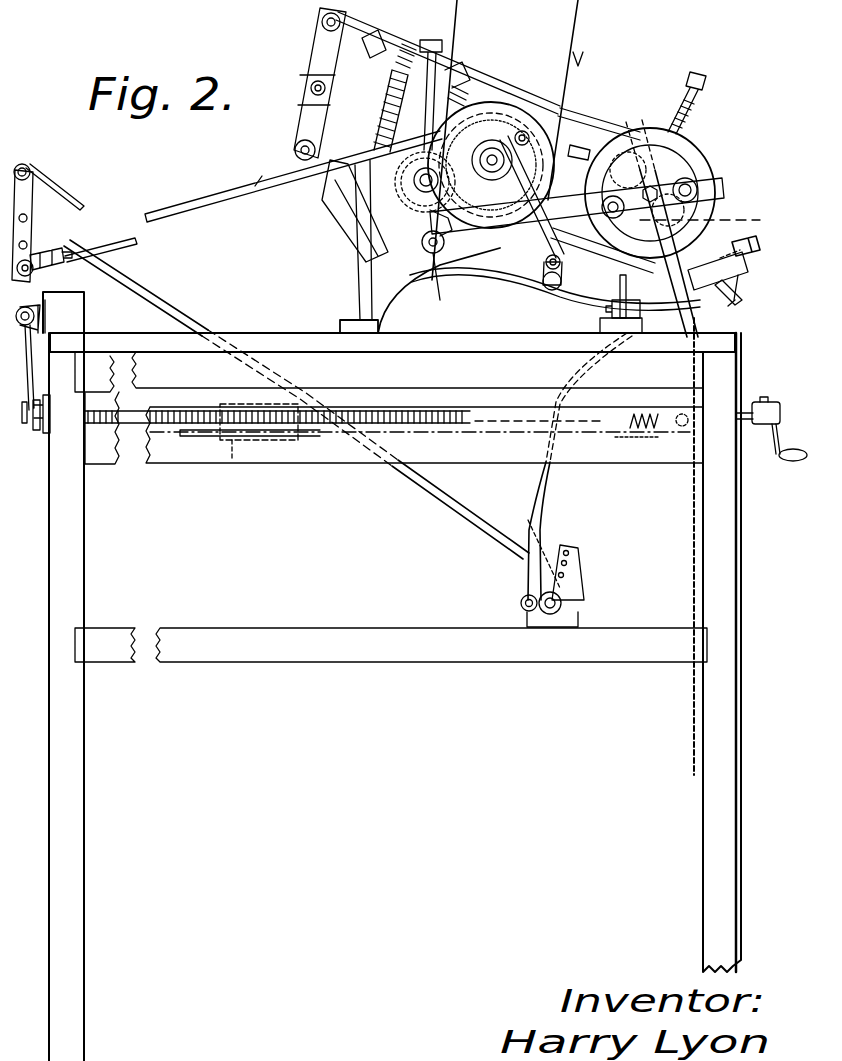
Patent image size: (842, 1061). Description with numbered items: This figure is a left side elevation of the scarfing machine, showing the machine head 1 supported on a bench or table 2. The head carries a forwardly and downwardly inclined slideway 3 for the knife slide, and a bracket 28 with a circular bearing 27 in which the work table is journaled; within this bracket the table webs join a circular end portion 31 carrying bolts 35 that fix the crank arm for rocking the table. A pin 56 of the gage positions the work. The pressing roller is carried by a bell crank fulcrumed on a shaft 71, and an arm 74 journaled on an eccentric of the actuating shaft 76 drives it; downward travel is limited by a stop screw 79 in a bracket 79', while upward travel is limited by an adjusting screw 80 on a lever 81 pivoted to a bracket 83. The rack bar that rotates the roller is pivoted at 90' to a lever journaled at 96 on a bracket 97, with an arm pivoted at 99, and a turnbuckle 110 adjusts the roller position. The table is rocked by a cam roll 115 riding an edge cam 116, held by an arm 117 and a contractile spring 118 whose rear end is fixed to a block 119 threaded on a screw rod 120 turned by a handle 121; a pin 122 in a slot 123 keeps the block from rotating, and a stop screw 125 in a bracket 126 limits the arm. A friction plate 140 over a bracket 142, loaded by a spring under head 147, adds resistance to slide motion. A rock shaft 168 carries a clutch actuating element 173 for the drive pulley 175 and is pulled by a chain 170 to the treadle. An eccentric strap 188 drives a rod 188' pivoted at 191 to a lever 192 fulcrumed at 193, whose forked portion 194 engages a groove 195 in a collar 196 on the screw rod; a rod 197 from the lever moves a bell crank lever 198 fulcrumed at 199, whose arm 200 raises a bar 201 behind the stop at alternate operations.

The machine head 1 is at (388, 296).
The bench or table 2 is at (252, 346).
The slideway 3 is at (605, 248).
The circular bearings 27 is at (690, 170).
The bracket 28 is at (702, 155).
The circular end portion 31 is at (665, 160).
The bolts 35 is at (696, 186).
The pin 56 is at (700, 210).
The shaft 71 is at (714, 220).
The arm 74 is at (500, 296).
The actuating shaft 76 is at (414, 180).
The stop screw 79 is at (724, 256).
The bracket 79' is at (738, 301).
The adjusting screw 80 is at (675, 104).
The lever 81 is at (592, 140).
The bracket 83 is at (598, 165).
The pivot 90' is at (311, 82).
The pivot 96 is at (295, 146).
The bracket 97 is at (332, 208).
The pivot 99 is at (310, 87).
The turnbuckle 110 is at (392, 48).
The cam roll 115 is at (435, 272).
The edge cam 116 is at (425, 212).
The arm 117 is at (656, 398).
The contractile spring 118 is at (655, 428).
The block 119 is at (232, 462).
The screw rod 120 is at (470, 405).
The handle 121 is at (763, 400).
The pin 122 is at (250, 430).
The slot 123 is at (200, 438).
The stop screw 125 is at (612, 315).
The bracket 126 is at (625, 320).
The friction plate 140 is at (372, 132).
The bracket 142 is at (330, 170).
The head 147 is at (440, 62).
The rock shaft 168 is at (548, 292).
The chain 170 is at (691, 508).
The clutch actuating element 173 is at (538, 252).
The drive pulley 175 is at (525, 105).
The eccentric strap 188 is at (530, 100).
The rod 188' is at (253, 199).
The pivot 191 is at (34, 256).
The lever 192 is at (20, 162).
The fulcrum 193 is at (34, 314).
The forked portion 194 is at (27, 425).
The groove 195 is at (40, 400).
The collar 196 is at (40, 432).
The rod 197 is at (74, 204).
The bell crank lever 198 is at (572, 575).
The fulcrum 199 is at (562, 604).
The arm 200 is at (521, 598).
The bar 201 is at (544, 516).